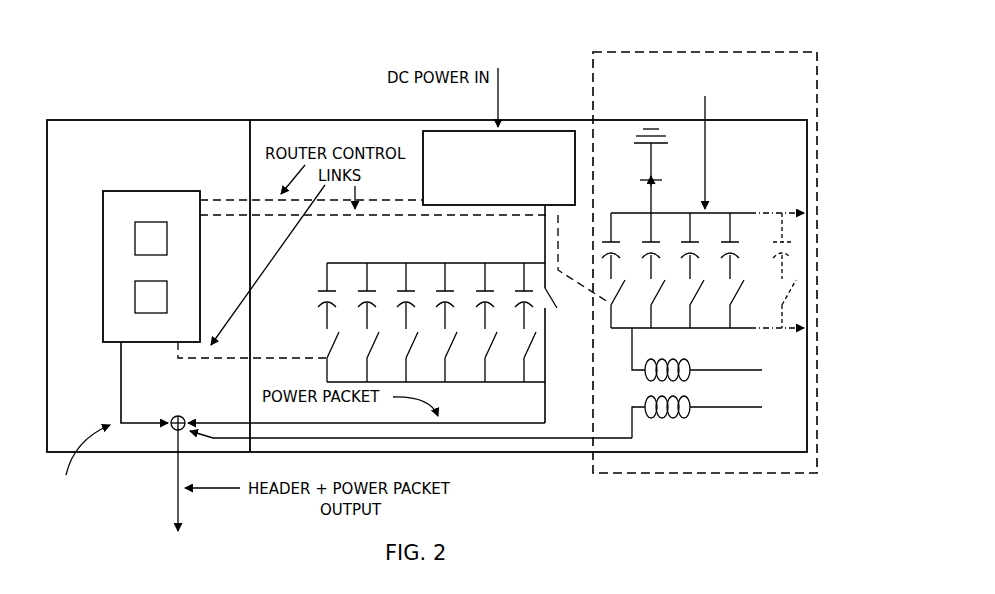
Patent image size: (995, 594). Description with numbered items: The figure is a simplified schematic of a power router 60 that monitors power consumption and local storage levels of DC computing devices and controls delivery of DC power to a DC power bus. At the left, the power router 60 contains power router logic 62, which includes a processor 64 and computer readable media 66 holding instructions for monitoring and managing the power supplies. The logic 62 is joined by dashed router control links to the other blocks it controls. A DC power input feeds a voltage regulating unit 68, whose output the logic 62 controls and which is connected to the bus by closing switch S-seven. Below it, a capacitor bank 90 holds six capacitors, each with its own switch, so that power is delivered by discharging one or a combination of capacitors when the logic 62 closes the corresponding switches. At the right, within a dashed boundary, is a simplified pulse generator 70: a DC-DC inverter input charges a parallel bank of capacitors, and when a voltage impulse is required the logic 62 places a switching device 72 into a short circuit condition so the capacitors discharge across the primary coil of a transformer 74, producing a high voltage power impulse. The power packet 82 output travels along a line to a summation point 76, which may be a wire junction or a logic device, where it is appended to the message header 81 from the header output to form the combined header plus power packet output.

The power router 60 is at (377, 108).
The power router logic 62 is at (151, 266).
The processor 64 is at (151, 238).
The computer readable media 66 is at (151, 297).
The voltage regulating unit 68 is at (499, 168).
The pulse generator 70 is at (720, 44).
The switching device 72 is at (634, 180).
The transformer 74 is at (632, 383).
The summation point 76 is at (178, 408).
The message header 81 is at (72, 485).
The power packet 82 is at (485, 444).
The capacitor bank 90 is at (363, 249).